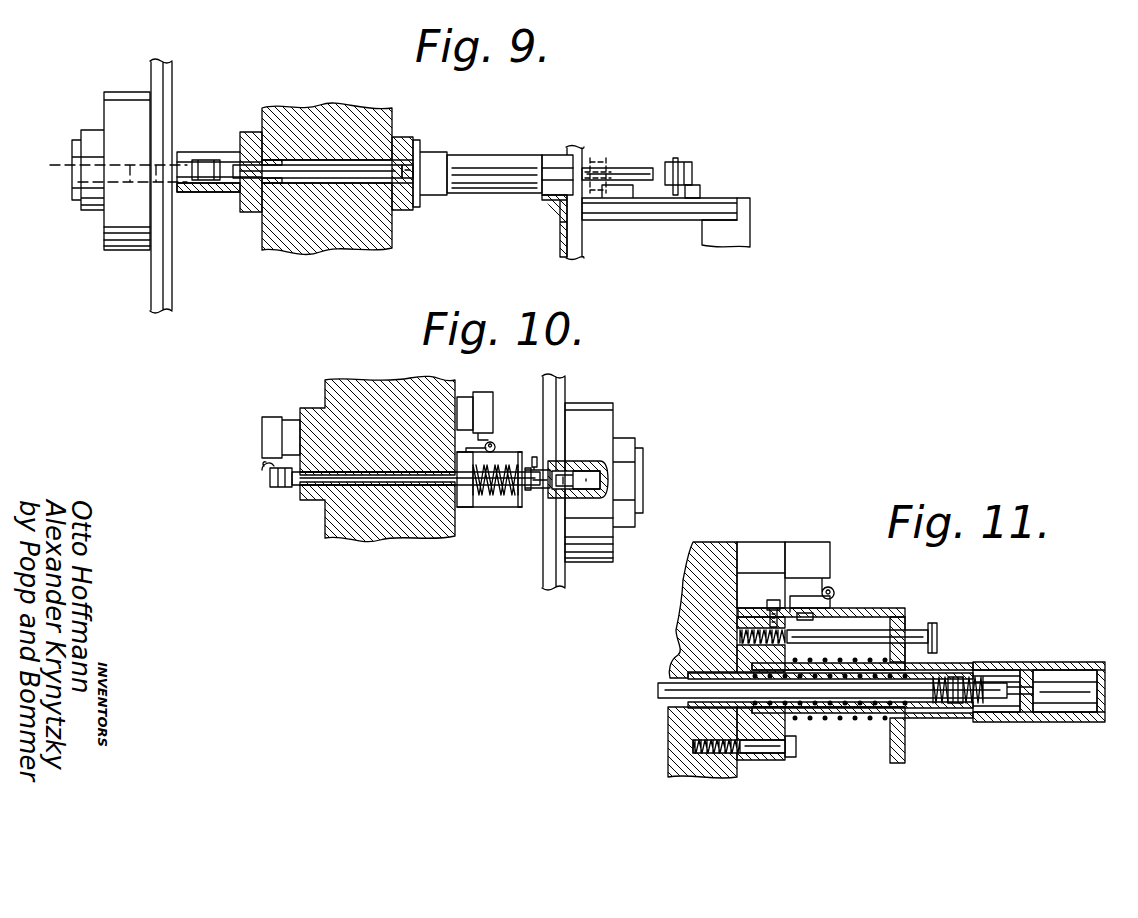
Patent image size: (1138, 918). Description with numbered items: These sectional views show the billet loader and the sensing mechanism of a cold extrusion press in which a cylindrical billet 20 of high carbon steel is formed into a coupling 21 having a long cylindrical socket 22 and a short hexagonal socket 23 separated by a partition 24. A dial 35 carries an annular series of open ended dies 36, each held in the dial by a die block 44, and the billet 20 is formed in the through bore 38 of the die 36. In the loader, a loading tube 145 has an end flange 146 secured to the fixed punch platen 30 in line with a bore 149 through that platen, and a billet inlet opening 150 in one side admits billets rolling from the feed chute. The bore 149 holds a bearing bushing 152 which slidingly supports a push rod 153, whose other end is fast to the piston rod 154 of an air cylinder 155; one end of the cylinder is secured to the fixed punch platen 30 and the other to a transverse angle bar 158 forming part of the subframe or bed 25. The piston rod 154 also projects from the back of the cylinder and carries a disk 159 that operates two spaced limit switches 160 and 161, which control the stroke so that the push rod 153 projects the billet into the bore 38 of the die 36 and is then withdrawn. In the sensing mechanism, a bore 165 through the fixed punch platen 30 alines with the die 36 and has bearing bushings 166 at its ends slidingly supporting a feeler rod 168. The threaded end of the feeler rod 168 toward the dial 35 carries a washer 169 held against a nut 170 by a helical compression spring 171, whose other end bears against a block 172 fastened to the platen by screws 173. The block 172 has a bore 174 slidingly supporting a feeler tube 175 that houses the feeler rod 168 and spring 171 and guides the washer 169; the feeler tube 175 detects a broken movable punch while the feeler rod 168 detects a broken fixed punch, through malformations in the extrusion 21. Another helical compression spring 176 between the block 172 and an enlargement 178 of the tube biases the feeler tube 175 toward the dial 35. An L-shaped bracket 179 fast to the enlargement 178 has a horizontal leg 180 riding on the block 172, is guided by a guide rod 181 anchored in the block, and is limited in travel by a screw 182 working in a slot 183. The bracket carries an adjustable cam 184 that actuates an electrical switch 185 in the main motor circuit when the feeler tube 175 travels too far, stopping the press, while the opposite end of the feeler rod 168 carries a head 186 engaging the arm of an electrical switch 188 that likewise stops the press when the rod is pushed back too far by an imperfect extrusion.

In FIG. 9, the cylindrical billet 20 is at (201, 158).
In FIG. 10, the coupling 21 is at (540, 469).
In FIG. 11, the coupling 21 is at (1034, 649).
In FIG. 10, the cylindrical socket 22 is at (586, 464).
In FIG. 11, the cylindrical socket 22 is at (1080, 685).
In FIG. 10, the hexagonal socket 23 is at (594, 470).
In FIG. 11, the hexagonal socket 23 is at (998, 665).
In FIG. 11, the partition 24 is at (1036, 690).
In FIG. 9, the subframe or bed 25 is at (750, 226).
In FIG. 9, the fixed punch platen 30 is at (335, 107).
In FIG. 10, the fixed punch platen 30 is at (385, 378).
In FIG. 11, the fixed punch platen 30 is at (671, 620).
In FIG. 9, the dial 35 is at (166, 64).
In FIG. 10, the dial 35 is at (559, 387).
In FIG. 9, the die 36 is at (92, 134).
In FIG. 10, the die 36 is at (640, 462).
In FIG. 9, the through bore 38 is at (98, 168).
In FIG. 9, the die block 44 is at (126, 243).
In FIG. 10, the die block 44 is at (602, 546).
In FIG. 9, the loading tube 145 is at (196, 190).
In FIG. 9, the end flange 146 is at (250, 212).
In FIG. 9, the bore 149 is at (342, 171).
In FIG. 9, the billet inlet opening 150 is at (212, 162).
In FIG. 9, the bearing bushing 152 is at (272, 161).
In FIG. 9, the push rod 153 is at (390, 170).
In FIG. 9, the piston rod 154 is at (614, 170).
In FIG. 9, the air cylinder 155 is at (495, 169).
In FIG. 9, the transverse angle bar 158 is at (562, 205).
In FIG. 9, the disk 159 is at (678, 161).
In FIG. 9, the limit switch 160 is at (686, 198).
In FIG. 9, the limit switch 161 is at (621, 198).
In FIG. 10, the bore 165 is at (350, 534).
In FIG. 10, the bearing bushing 166 is at (432, 485).
In FIG. 11, the bearing bushing 166 is at (693, 655).
In FIG. 10, the feeler rod 168 is at (538, 516).
In FIG. 11, the feeler rod 168 is at (1005, 693).
In FIG. 11, the washer 169 is at (960, 709).
In FIG. 11, the nut 170 is at (970, 705).
In FIG. 11, the helical compression spring 171 is at (948, 706).
In FIG. 10, the block 172 is at (462, 507).
In FIG. 11, the block 172 is at (750, 759).
In FIG. 11, the screw 173 is at (692, 748).
In FIG. 11, the bore 174 is at (668, 722).
In FIG. 10, the feeler tube 175 is at (520, 501).
In FIG. 11, the feeler tube 175 is at (815, 722).
In FIG. 10, the helical compression spring 176 is at (471, 512).
In FIG. 11, the helical compression spring 176 is at (873, 718).
In FIG. 11, the enlargement 178 is at (907, 720).
In FIG. 10, the L-shaped bracket 179 is at (494, 498).
In FIG. 11, the L-shaped bracket 179 is at (897, 764).
In FIG. 11, the horizontal leg 180 is at (880, 609).
In FIG. 11, the guide rod 181 is at (914, 632).
In FIG. 11, the screw 182 is at (766, 599).
In FIG. 11, the slot 183 is at (740, 541).
In FIG. 11, the adjustable cam 184 is at (796, 599).
In FIG. 10, the electrical switch 185 is at (482, 398).
In FIG. 11, the electrical switch 185 is at (816, 559).
In FIG. 10, the head 186 is at (278, 488).
In FIG. 10, the electrical switch 188 is at (272, 430).